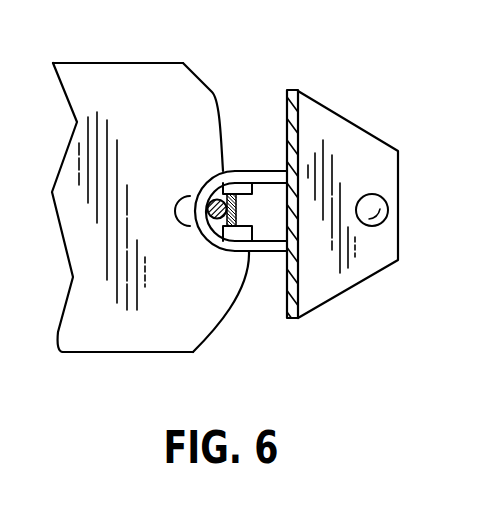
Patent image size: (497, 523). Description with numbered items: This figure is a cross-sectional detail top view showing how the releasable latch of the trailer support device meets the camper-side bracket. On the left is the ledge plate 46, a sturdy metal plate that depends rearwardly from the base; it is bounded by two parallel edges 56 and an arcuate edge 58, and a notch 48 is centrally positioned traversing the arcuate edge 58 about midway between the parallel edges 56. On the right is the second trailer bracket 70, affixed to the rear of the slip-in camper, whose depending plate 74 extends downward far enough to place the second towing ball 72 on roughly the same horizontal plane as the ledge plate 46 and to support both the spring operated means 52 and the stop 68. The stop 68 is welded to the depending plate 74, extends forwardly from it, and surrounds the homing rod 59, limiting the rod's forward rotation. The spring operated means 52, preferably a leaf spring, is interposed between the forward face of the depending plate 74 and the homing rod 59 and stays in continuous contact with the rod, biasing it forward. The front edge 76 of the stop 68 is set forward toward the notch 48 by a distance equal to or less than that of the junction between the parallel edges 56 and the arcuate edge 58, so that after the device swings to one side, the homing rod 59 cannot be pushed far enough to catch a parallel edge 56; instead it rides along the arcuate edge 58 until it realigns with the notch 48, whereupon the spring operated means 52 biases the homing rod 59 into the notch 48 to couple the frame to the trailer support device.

The ledge plate 46 is at (167, 95).
The notch 48 is at (178, 216).
The spring operated means 52 is at (237, 209).
The parallel edges 56 is at (114, 62).
The arcuate edge 58 is at (223, 320).
The homing rod 59 is at (248, 163).
The stop 68 is at (263, 169).
The second trailer bracket 70 is at (353, 150).
The second towing ball 72 is at (378, 203).
The depending plate 74 is at (293, 92).
The front edge 76 is at (195, 196).